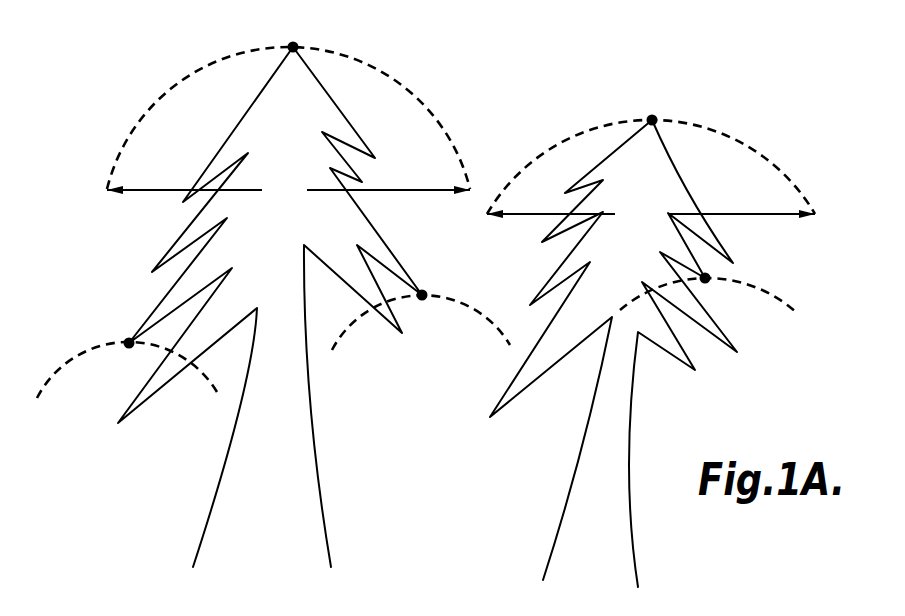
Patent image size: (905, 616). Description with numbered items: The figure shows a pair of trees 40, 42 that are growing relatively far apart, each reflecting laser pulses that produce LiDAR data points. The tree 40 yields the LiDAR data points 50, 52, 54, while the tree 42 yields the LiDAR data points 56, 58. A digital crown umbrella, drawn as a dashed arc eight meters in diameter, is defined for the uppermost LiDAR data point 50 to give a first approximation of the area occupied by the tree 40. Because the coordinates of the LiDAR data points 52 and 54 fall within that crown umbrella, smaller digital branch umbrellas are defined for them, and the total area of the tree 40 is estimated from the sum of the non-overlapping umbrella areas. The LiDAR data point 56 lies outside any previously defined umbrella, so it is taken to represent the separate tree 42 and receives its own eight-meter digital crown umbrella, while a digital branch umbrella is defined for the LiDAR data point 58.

The tree 40 is at (322, 117).
The tree 42 is at (670, 166).
The LiDAR data point 50 is at (297, 44).
The LiDAR data point 52 is at (126, 340).
The LiDAR data point 54 is at (426, 293).
The LiDAR data point 56 is at (656, 116).
The LiDAR data point 58 is at (710, 276).